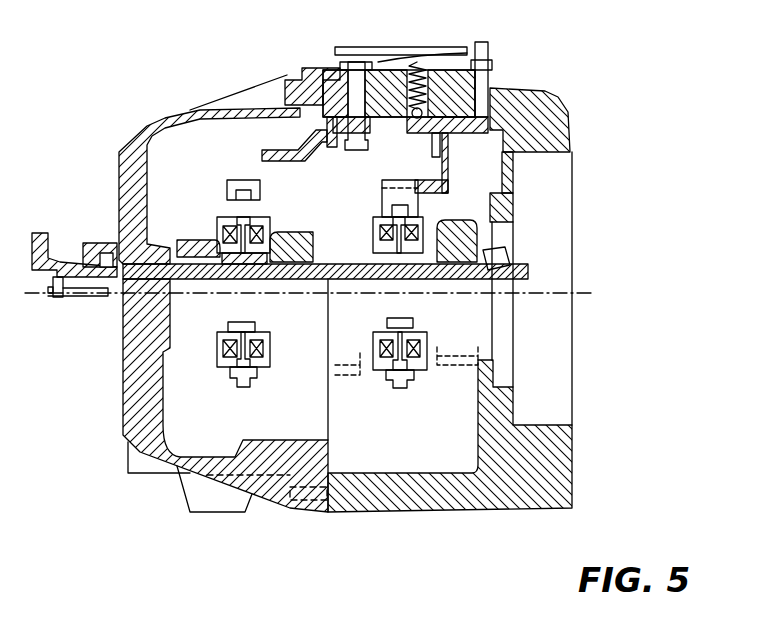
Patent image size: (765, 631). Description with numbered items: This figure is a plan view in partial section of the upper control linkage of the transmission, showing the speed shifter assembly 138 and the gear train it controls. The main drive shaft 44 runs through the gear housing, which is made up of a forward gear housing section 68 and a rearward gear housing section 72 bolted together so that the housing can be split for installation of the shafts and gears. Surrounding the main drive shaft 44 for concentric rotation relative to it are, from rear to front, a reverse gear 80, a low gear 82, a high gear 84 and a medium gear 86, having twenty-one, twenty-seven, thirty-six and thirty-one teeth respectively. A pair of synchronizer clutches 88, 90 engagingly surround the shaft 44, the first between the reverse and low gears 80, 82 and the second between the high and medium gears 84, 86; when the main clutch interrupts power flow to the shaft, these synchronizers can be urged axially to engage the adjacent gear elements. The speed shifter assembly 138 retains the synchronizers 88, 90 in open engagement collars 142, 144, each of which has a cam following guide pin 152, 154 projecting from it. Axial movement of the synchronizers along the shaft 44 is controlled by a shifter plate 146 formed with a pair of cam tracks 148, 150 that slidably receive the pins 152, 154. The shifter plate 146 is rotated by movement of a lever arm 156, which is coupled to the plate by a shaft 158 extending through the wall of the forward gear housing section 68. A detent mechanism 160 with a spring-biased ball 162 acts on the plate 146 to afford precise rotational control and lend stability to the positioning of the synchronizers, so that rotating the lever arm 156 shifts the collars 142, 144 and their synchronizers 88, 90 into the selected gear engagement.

The main drive shaft 44 is at (230, 280).
The forward gear housing section 68 is at (423, 512).
The rearward gear housing section 72 is at (250, 492).
The reverse gear 80 is at (195, 280).
The low gear 82 is at (290, 262).
The high gear 84 is at (336, 262).
The medium gear 86 is at (452, 262).
The synchronizer clutch 88 is at (233, 396).
The synchronizer clutch 90 is at (423, 395).
The speed shifter assembly 138 is at (285, 132).
The engagement collar 142 is at (233, 179).
The engagement collar 144 is at (380, 196).
The shifter plate 146 is at (300, 76).
The cam track 148 is at (262, 153).
The cam track 150 is at (420, 135).
The cam following guide pin 152 is at (270, 196).
The cam following guide pin 154 is at (452, 143).
The lever arm 156 is at (427, 45).
The shaft 158 is at (356, 70).
The detent mechanism 160 is at (430, 78).
The spring-biased ball 162 is at (424, 112).